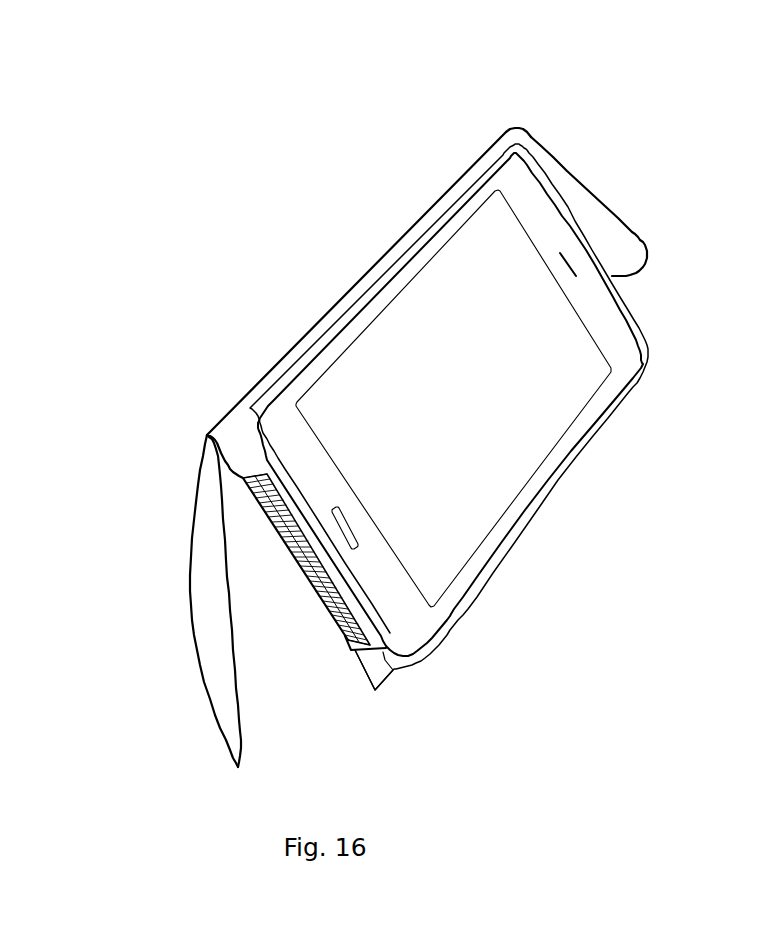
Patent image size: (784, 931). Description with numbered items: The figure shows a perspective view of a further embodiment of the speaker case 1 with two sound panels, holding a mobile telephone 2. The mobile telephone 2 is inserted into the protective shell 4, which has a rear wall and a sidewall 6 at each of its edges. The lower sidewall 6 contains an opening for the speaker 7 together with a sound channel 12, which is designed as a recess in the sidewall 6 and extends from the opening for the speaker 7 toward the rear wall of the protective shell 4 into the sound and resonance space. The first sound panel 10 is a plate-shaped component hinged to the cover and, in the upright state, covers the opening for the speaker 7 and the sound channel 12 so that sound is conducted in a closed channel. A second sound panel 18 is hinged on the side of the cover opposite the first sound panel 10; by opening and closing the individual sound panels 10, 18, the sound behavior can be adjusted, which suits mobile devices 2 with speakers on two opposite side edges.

The speaker case 1 is at (421, 399).
The mobile telephone 2 is at (463, 258).
The protective shell 4 is at (374, 224).
The sidewall 6 is at (352, 303).
The opening for the speaker 7 is at (347, 641).
The sound panel 10 is at (206, 580).
The sound channel 12 is at (327, 602).
The second sound panel 18 is at (613, 243).